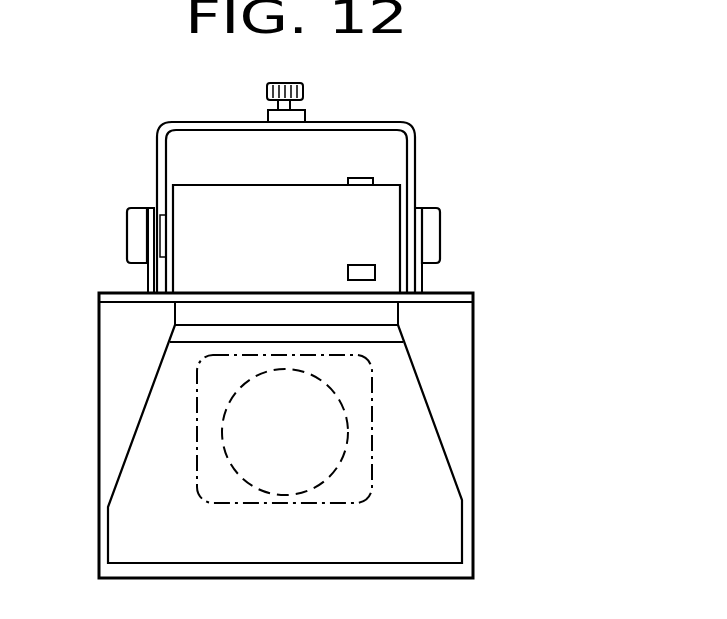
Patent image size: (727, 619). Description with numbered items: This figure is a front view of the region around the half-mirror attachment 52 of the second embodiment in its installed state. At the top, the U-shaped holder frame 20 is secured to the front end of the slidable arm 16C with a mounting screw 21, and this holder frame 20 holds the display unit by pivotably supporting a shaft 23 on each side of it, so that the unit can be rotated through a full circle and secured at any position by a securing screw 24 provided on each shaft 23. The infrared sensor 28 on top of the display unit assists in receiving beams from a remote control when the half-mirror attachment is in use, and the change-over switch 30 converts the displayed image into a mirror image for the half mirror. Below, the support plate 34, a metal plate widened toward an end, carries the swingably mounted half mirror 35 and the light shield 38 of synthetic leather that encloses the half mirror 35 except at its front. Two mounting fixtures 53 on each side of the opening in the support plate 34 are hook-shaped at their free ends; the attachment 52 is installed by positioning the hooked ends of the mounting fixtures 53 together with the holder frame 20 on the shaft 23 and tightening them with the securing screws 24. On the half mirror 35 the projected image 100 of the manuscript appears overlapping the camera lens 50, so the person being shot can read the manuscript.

The slidable arm 16C is at (305, 116).
The holder frame 20 is at (416, 153).
The mounting screw 21 is at (267, 92).
The shaft 23 is at (170, 228).
The securing screw 24 is at (127, 225).
The infrared sensor 28 is at (362, 264).
The change-over switch 30 is at (361, 177).
The support plate 34 is at (455, 303).
The half mirror 35 is at (168, 536).
The light shield 38 is at (99, 436).
The camera lens 50 is at (266, 493).
The half-mirror attachment 52 is at (500, 427).
The mounting fixture 53 is at (148, 281).
The projected image 100 is at (372, 470).